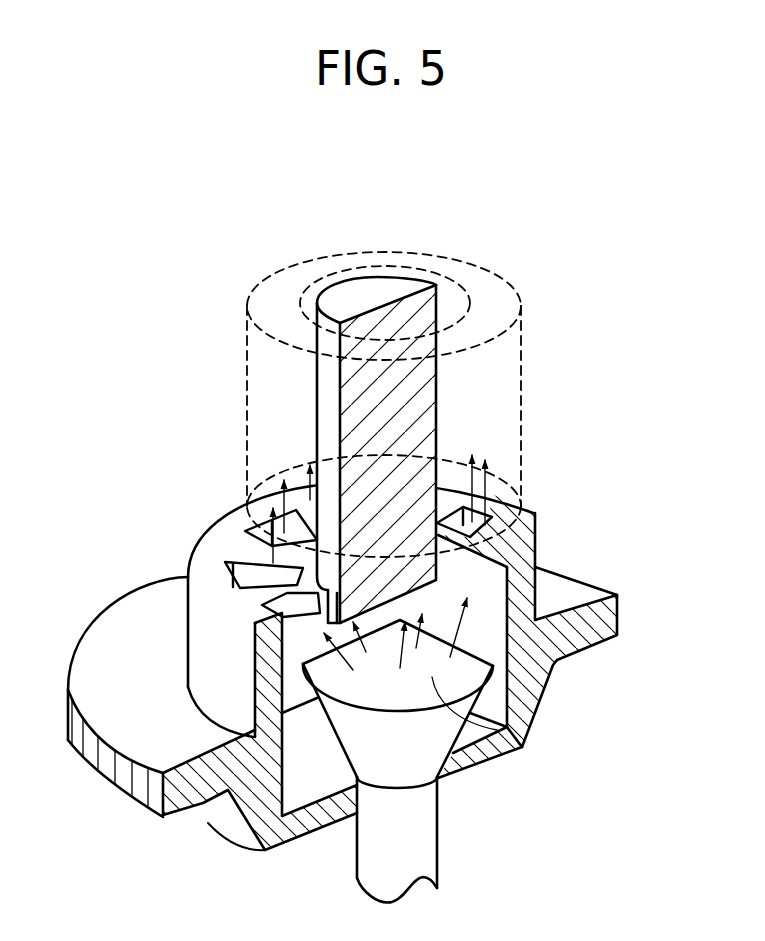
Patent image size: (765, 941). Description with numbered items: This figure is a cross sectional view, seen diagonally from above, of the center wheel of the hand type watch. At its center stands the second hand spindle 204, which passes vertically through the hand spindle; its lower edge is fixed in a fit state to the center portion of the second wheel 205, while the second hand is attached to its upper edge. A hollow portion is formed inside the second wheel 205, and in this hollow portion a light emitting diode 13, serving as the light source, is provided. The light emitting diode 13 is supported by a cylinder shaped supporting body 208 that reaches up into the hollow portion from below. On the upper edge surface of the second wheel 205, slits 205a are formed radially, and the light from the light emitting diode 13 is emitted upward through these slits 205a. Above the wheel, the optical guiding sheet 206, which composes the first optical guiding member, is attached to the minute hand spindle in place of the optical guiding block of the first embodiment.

The light emitting diode 13 is at (491, 749).
The second hand spindle 204 is at (427, 431).
The second wheel 205 is at (578, 582).
The slits 205a is at (300, 505).
The optical guiding sheet 206 is at (522, 338).
The supporting body 208 is at (357, 857).